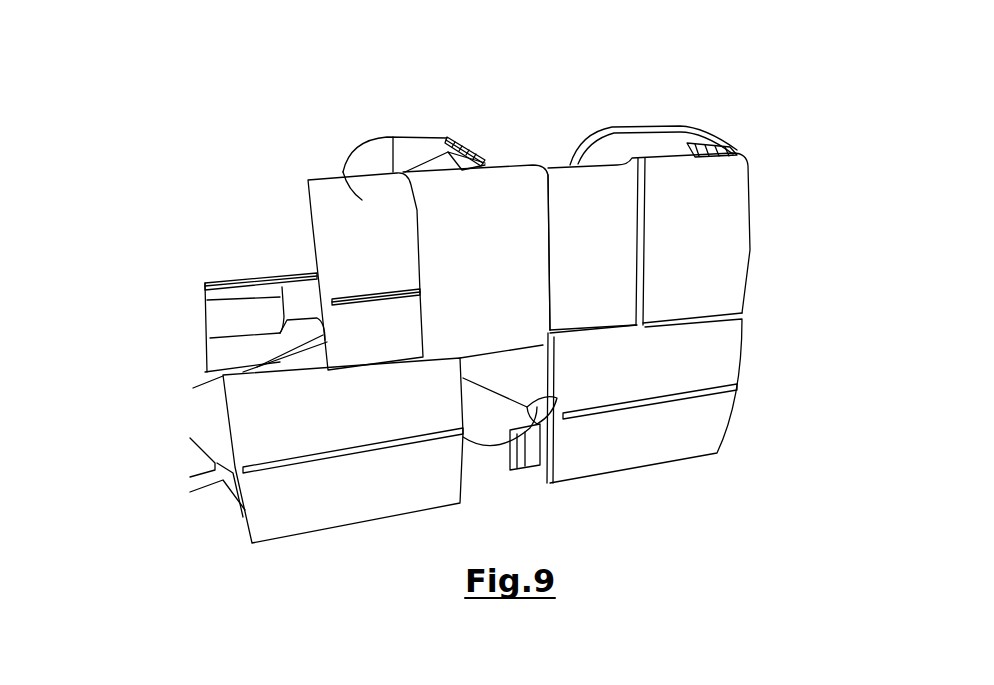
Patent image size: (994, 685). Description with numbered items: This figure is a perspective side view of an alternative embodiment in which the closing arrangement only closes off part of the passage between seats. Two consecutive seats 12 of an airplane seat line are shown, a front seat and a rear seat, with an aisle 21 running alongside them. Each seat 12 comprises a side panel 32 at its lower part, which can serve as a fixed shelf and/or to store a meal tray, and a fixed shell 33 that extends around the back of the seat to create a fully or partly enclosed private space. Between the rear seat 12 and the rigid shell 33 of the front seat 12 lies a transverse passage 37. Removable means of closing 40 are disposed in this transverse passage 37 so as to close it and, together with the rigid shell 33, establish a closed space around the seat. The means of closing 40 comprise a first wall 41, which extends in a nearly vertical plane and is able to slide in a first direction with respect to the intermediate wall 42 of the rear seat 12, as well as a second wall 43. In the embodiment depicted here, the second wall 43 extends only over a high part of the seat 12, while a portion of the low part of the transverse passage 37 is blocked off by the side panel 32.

The seat 12 is at (575, 191).
The aisle 21 is at (475, 425).
The side panel 32 is at (280, 423).
The fixed shell 33 is at (457, 141).
The transverse passage 37 is at (522, 487).
The means of closing 40 is at (513, 228).
The first wall 41 is at (593, 190).
The intermediate wall 42 is at (345, 170).
The second wall 43 is at (438, 192).